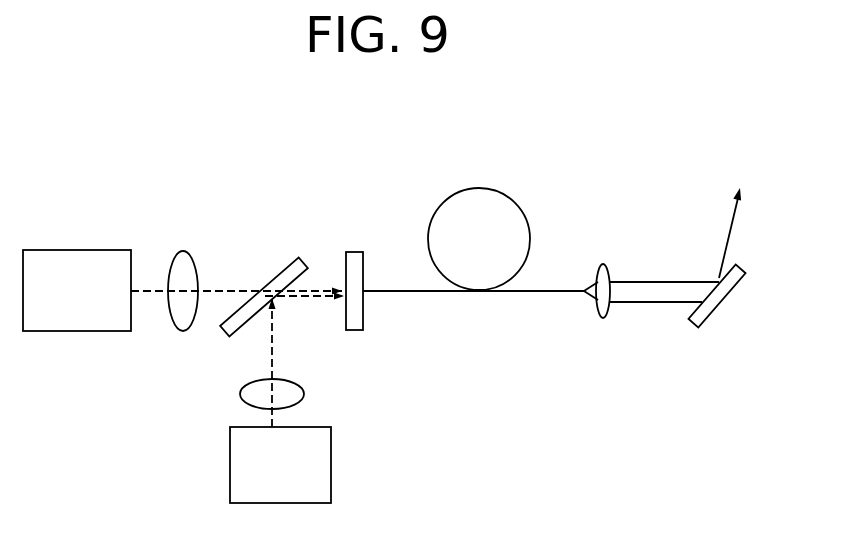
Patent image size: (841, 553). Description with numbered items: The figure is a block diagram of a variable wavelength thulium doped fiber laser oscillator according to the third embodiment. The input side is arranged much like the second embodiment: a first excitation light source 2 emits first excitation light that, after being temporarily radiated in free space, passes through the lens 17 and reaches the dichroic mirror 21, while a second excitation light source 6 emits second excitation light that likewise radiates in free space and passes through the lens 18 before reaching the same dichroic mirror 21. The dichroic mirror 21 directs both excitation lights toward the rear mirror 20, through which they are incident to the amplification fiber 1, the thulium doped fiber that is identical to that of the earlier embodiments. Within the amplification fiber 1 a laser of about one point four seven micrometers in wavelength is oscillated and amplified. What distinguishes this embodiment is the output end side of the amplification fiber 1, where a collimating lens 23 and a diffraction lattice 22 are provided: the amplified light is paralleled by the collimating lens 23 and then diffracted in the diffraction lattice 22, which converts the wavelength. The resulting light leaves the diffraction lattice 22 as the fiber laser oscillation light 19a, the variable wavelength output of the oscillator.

The amplification fiber 1 is at (476, 188).
The first excitation light source 2 is at (78, 250).
The second excitation light source 6 is at (331, 463).
The lens 17 is at (183, 252).
The lens 18 is at (305, 393).
The fiber laser oscillation light 19a is at (742, 214).
The rear mirror 20 is at (353, 252).
The dichroic mirror 21 is at (282, 258).
The diffraction lattice 22 is at (690, 320).
The collimating lens 23 is at (604, 264).